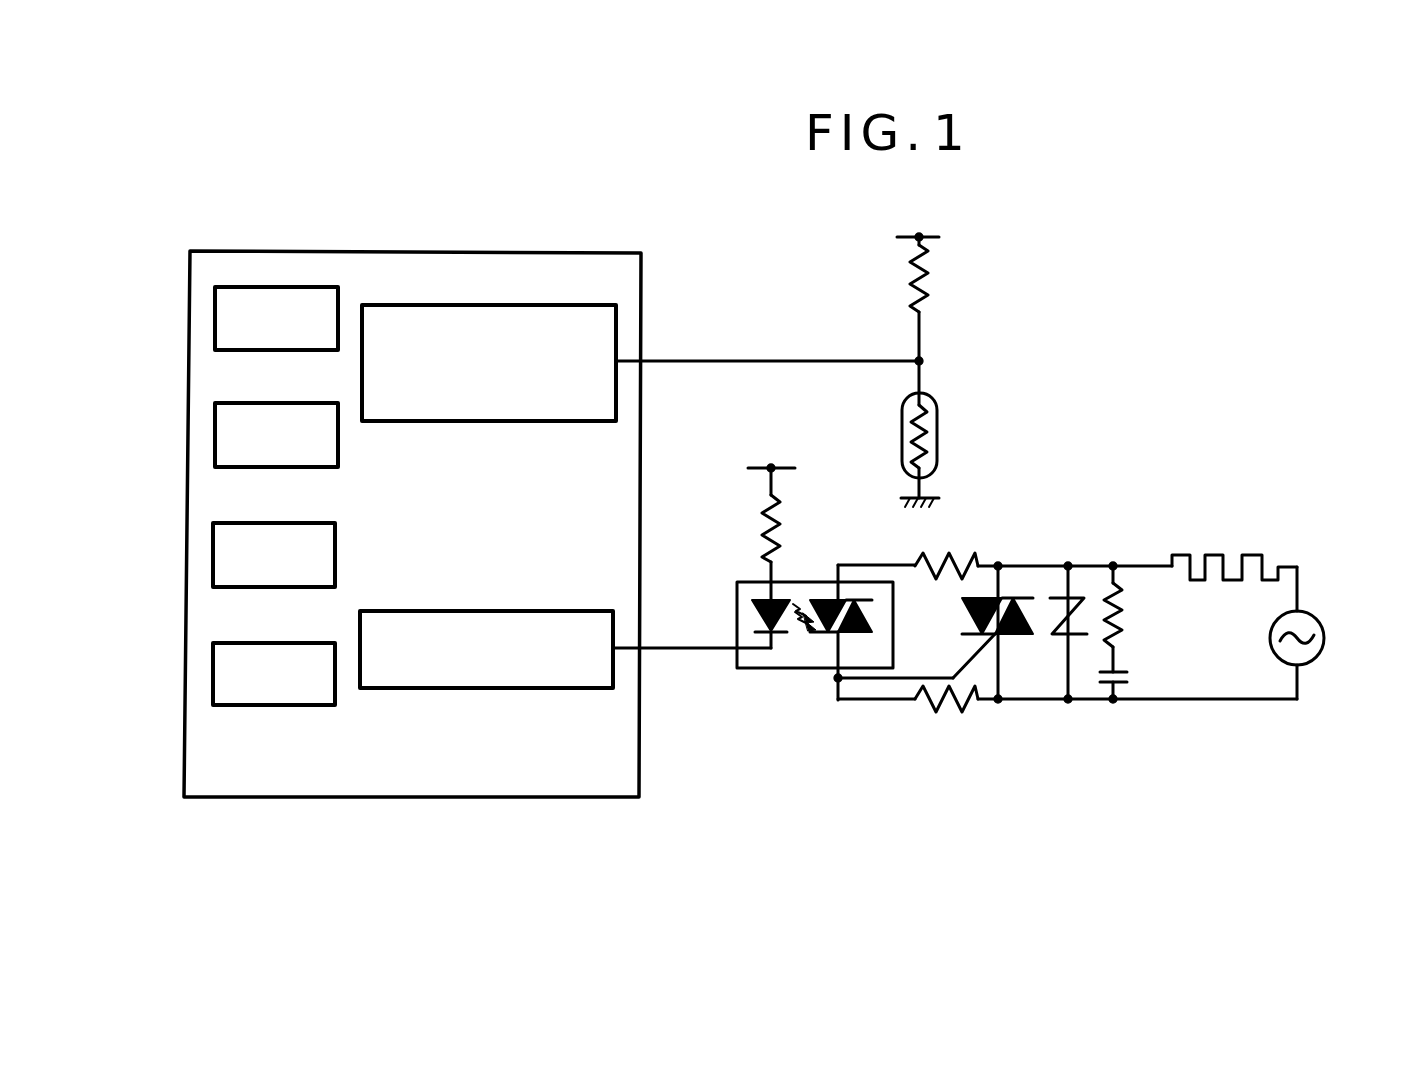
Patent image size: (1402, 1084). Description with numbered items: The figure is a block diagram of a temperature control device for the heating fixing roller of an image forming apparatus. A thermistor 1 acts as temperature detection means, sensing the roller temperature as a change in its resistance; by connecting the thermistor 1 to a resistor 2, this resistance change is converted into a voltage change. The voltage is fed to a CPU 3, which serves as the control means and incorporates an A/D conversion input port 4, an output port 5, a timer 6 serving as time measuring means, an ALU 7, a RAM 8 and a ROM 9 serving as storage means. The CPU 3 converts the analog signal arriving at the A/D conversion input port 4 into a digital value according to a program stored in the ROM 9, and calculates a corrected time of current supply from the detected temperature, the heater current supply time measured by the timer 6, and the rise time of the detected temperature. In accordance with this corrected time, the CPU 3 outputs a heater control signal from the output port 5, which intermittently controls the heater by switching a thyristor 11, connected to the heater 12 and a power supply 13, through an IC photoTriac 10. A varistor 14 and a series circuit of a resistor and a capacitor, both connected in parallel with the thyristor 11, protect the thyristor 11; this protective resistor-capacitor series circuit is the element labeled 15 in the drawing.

The thermistor 1 is at (938, 428).
The resistor 2 is at (930, 292).
The CPU 3 is at (445, 249).
The A/D conversion input port 4 is at (495, 303).
The output port 5 is at (477, 609).
The timer 6 is at (247, 352).
The ALU 7 is at (247, 469).
The RAM 8 is at (250, 589).
The ROM 9 is at (255, 707).
The IC photoTriac 10 is at (804, 655).
The thyristor 11 is at (1007, 593).
The heater 12 is at (1232, 552).
The power supply 13 is at (1312, 617).
The varistor 14 is at (1055, 634).
The snubber circuit (resistor and capacitor) 15 is at (1135, 650).